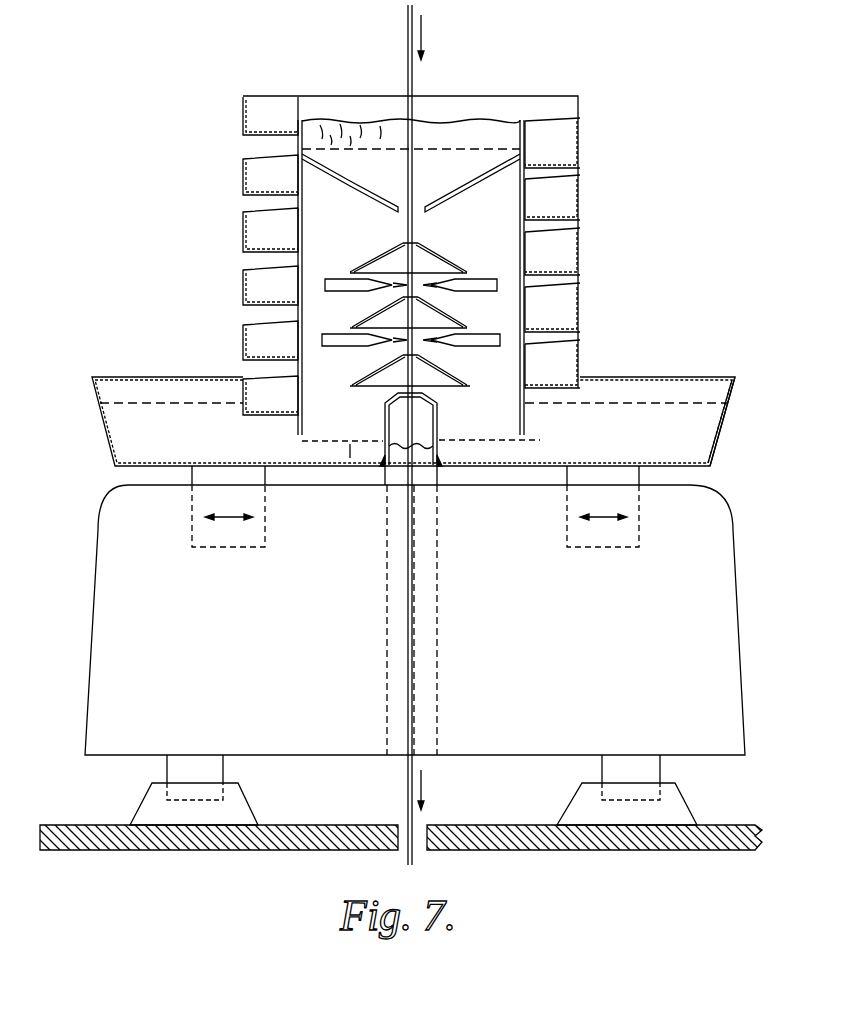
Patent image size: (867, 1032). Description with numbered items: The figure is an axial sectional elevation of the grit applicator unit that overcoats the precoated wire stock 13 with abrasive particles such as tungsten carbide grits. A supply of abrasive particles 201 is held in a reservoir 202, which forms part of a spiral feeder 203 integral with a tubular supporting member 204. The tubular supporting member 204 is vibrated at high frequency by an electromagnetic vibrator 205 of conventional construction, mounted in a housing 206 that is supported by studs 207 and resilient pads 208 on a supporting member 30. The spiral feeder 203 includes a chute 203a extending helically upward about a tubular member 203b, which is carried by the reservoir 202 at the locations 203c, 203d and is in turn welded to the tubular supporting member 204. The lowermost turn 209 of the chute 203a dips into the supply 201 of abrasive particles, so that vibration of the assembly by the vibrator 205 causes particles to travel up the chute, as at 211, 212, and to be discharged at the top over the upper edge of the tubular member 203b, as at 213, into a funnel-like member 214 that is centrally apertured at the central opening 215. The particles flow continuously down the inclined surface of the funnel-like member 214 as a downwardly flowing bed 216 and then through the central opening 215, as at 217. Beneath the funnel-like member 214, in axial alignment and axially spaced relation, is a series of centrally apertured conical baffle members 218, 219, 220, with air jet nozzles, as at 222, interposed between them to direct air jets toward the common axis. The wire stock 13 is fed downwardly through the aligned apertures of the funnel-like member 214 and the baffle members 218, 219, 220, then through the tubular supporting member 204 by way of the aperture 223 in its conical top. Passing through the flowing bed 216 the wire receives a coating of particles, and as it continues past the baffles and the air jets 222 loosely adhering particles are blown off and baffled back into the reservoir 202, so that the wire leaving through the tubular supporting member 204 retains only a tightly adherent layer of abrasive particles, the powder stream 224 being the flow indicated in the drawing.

The wire stock 13 is at (408, 31).
The supporting member 30 is at (640, 850).
The supply of abrasive particles 201 is at (714, 448).
The reservoir 202 is at (736, 378).
The spiral feeder 203 is at (584, 283).
The chute 203a is at (581, 202).
The tubular member 203b is at (521, 198).
The connection of tubular member to reservoir 203c is at (352, 450).
The connection of tubular member to reservoir 203d is at (517, 446).
The tubular supporting member 204 is at (440, 582).
The electromagnetic vibrator 205 is at (266, 532).
The housing 206 is at (736, 646).
The studs 207 is at (178, 762).
The resilient pads 208 is at (156, 812).
The lowermost turn 209 is at (245, 395).
The abrasive particles traveling up the chute 211 is at (268, 400).
The abrasive particles traveling up the chute 212 is at (262, 120).
The discharge of abrasive particles 213 is at (304, 120).
The funnel-like member 214 is at (360, 188).
The central opening 215 is at (397, 210).
The downwardly flowing bed of abrasive particles 216 is at (364, 174).
The flow of abrasive particles through central opening 217 is at (426, 221).
The baffle member 218 is at (447, 258).
The baffle member 219 is at (447, 310).
The baffle member 220 is at (445, 376).
The air jet nozzle 222 is at (493, 343).
The aperture in conical top 223 is at (402, 393).
The powder stream 224 is at (358, 255).